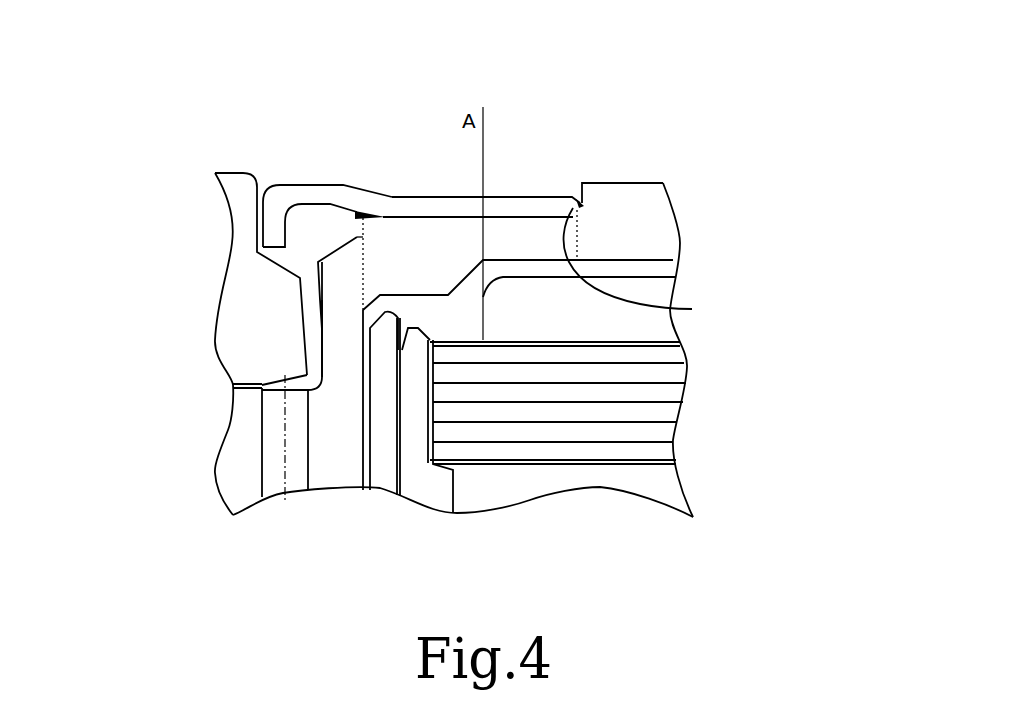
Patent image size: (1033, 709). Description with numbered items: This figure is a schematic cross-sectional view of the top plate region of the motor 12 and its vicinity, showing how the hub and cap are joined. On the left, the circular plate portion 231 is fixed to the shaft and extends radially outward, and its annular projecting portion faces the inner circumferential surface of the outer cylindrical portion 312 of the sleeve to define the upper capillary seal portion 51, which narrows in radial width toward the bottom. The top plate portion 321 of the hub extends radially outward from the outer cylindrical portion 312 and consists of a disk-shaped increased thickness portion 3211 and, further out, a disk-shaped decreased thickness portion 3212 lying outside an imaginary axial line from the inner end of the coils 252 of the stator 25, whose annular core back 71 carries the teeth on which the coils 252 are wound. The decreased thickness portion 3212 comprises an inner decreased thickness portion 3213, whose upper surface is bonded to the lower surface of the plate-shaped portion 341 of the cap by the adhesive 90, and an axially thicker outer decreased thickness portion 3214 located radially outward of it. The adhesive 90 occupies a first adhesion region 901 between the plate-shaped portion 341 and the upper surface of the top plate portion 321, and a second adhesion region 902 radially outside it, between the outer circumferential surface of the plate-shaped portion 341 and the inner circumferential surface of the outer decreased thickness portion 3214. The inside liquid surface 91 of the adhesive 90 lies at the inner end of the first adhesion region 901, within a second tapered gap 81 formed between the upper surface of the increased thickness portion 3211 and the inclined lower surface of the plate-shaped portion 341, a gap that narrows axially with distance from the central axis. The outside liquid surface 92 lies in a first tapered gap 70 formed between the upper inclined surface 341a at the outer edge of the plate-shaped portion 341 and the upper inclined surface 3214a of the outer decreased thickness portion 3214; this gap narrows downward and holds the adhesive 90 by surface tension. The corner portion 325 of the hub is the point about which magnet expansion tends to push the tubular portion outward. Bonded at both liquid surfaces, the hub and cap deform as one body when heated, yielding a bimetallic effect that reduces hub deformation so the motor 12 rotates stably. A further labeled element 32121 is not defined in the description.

The motor 12 is at (103, 46).
The stator 25 is at (622, 413).
The coils 252 is at (613, 323).
The circular plate portion 231 is at (227, 210).
The outer cylindrical portion 312 is at (343, 360).
The top plate portion 321 is at (868, 193).
The increased thickness portion 3211 is at (425, 253).
The decreased thickness portion 3212 is at (777, 227).
The inner decreased thickness portion 3213 is at (543, 237).
The outer decreased thickness portion 3214 is at (653, 245).
The upper inclined surface 3214a is at (581, 204).
The plate inner surface 32121 is at (487, 240).
The corner portion 325 is at (360, 213).
The plate-shaped portion 341 is at (520, 203).
The upper inclined surface 341a is at (692, 309).
The upper capillary seal portion 51 is at (310, 313).
The first tapered gap 70 is at (588, 198).
The core back 71 is at (453, 397).
The second tapered gap 81 is at (330, 225).
The adhesive 90 is at (583, 203).
The first adhesion region 901 is at (383, 212).
The second adhesion region 902 is at (613, 110).
The inside liquid surface 91 is at (357, 237).
The outside liquid surface 92 is at (578, 200).